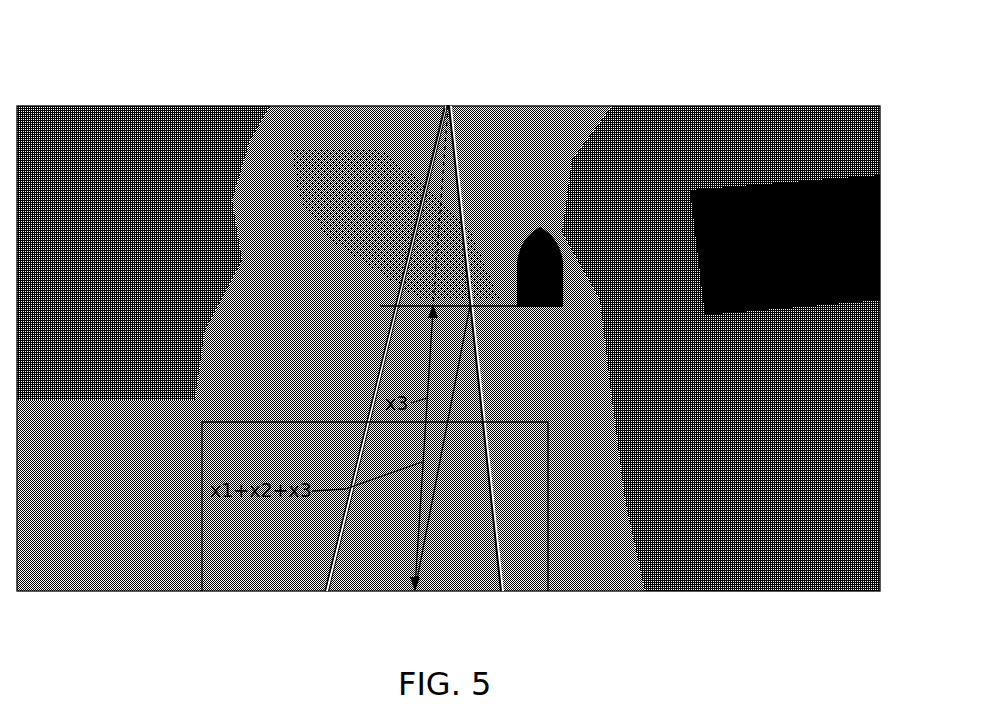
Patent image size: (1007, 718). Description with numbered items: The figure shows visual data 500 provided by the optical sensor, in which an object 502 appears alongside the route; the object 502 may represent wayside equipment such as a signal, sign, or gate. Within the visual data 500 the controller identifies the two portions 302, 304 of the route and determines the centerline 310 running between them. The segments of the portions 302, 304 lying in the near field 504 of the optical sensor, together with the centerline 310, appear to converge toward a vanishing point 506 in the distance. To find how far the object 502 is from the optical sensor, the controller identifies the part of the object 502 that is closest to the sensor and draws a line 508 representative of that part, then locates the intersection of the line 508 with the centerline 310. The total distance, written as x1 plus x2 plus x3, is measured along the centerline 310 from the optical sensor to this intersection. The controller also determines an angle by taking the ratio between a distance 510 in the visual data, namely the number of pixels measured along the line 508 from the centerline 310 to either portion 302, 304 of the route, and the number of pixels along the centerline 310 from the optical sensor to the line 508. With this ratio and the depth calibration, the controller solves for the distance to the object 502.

The visual data 500 is at (702, 82).
The object 502 is at (522, 228).
The near field 504 is at (411, 506).
The vanishing point 506 is at (476, 137).
The line 508 is at (374, 349).
The distance 510 is at (444, 416).
The portion of the route 302 is at (374, 348).
The portion of the route 304 is at (499, 348).
The centerline 310 is at (398, 206).